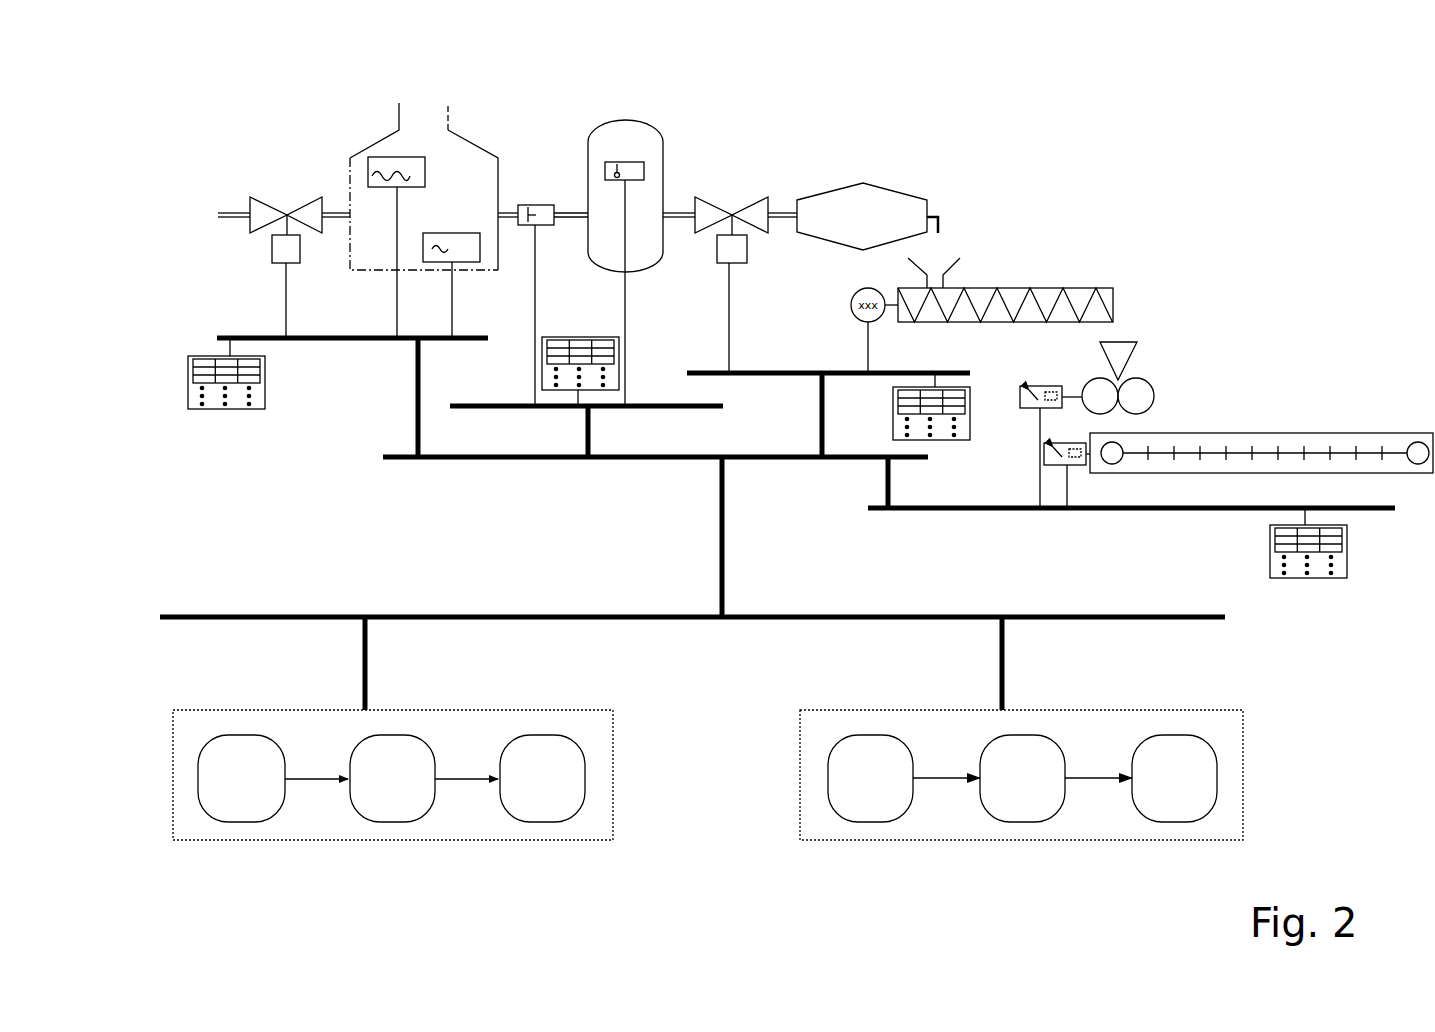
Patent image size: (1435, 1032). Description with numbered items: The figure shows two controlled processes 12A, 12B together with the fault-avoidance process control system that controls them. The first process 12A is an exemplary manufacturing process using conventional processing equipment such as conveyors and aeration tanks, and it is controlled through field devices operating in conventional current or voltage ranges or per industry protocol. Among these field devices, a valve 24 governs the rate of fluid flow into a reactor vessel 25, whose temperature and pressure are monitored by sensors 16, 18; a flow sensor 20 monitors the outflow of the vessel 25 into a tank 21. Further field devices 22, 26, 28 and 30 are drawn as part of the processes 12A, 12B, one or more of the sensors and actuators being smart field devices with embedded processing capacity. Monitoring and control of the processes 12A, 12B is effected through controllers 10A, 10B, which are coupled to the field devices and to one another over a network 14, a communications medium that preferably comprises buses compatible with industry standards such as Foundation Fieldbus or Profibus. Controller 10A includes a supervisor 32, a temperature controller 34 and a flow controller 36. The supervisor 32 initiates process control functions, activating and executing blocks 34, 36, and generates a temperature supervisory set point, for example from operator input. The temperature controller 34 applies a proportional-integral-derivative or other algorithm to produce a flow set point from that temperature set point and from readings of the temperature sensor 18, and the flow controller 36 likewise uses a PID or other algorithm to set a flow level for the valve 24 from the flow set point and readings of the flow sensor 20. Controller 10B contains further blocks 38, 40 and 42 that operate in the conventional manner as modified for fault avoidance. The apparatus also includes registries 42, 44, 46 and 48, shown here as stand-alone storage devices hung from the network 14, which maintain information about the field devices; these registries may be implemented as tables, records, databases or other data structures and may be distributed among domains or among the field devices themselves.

The controller 10A is at (457, 772).
The controller 10B is at (1084, 775).
The process 12A is at (297, 102).
The process 12B is at (1107, 103).
The network 14 is at (398, 543).
The pressure sensor 16 is at (368, 175).
The temperature sensor 18 is at (463, 263).
The flow sensor 20 is at (545, 205).
The tank 21 is at (625, 120).
The level sensor 22 is at (633, 162).
The valve 24 is at (270, 255).
The reactor vessel 25 is at (347, 272).
The valve actuator 26 is at (717, 255).
The roller drive actuator 28 is at (1038, 385).
The conveyor drive actuator 30 is at (1075, 466).
The supervisor 32 is at (241, 778).
The temperature controller 34 is at (392, 778).
The flow controller 36 is at (542, 778).
The control block 38 is at (870, 778).
The control block 40 is at (1022, 778).
The registry 42 is at (172, 303).
The registry 44 is at (567, 392).
The registry 46 is at (953, 441).
The registry 48 is at (1347, 580).